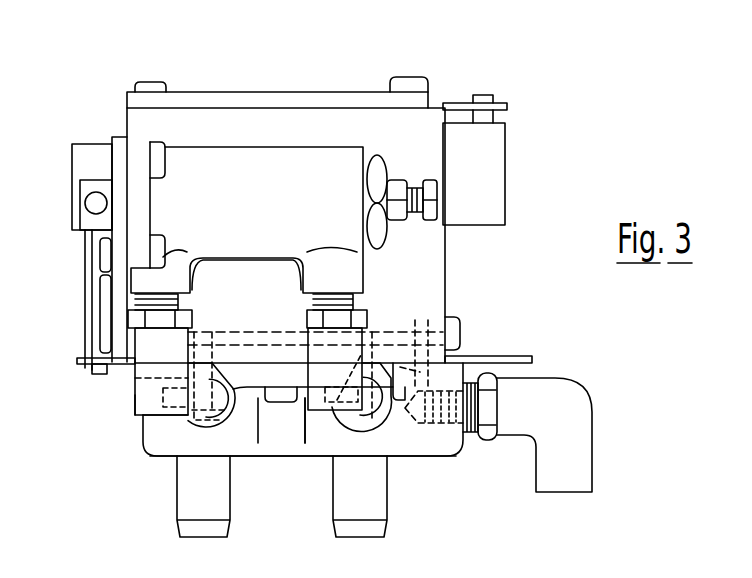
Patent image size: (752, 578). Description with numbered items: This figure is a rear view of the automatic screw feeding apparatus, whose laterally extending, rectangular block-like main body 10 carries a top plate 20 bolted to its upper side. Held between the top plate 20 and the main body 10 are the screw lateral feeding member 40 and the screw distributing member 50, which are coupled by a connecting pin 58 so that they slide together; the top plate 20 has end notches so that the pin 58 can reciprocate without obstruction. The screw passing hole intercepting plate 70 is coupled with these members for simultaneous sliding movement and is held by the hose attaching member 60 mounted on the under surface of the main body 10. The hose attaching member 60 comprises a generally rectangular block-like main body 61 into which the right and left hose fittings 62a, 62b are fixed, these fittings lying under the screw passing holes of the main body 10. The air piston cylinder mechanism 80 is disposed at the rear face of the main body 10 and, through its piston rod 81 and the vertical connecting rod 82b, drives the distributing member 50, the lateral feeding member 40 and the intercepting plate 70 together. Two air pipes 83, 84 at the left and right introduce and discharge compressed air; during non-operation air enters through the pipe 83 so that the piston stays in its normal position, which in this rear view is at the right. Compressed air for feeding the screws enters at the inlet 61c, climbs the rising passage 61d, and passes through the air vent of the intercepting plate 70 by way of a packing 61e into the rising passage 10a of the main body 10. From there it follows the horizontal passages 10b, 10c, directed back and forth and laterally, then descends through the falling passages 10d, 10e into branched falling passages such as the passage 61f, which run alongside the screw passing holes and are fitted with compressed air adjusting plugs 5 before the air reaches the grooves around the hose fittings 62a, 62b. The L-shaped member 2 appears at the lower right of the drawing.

The mounting arm 2 is at (585, 438).
The compressed air adjusting plug 5 is at (220, 422).
The main body 10 is at (447, 273).
The rising passage 10a is at (472, 335).
The horizontal passage 10b is at (423, 330).
The horizontal passage 10c is at (380, 328).
The falling passage 10d is at (337, 352).
The falling passage 10e is at (160, 354).
The top plate 20 is at (292, 88).
The screw lateral feeding member 40 is at (461, 90).
The screw distributing member 50 is at (512, 173).
The connecting pin 58 is at (487, 98).
The hose attaching member 60 is at (131, 522).
The main body of hose attaching member 61 is at (145, 461).
The inlet 61c is at (440, 425).
The rising passage 61d is at (462, 373).
The packing 61e is at (324, 427).
The falling passage 61f is at (133, 382).
The hose fitting 62a is at (388, 507).
The hose fitting 62b is at (226, 507).
The screw passing hole intercepting plate 70 is at (508, 343).
The air piston cylinder mechanism 80 is at (234, 165).
The piston rod 81 is at (82, 188).
The vertical connecting rod 82b is at (92, 293).
The air pipe 83 is at (133, 396).
The air pipe 84 is at (293, 348).